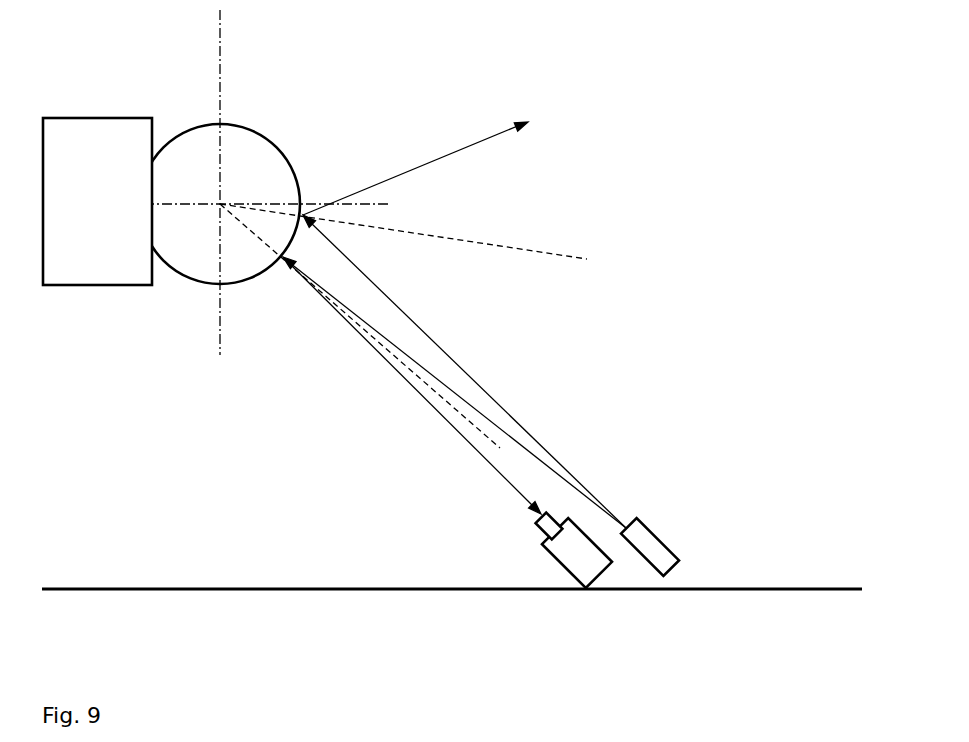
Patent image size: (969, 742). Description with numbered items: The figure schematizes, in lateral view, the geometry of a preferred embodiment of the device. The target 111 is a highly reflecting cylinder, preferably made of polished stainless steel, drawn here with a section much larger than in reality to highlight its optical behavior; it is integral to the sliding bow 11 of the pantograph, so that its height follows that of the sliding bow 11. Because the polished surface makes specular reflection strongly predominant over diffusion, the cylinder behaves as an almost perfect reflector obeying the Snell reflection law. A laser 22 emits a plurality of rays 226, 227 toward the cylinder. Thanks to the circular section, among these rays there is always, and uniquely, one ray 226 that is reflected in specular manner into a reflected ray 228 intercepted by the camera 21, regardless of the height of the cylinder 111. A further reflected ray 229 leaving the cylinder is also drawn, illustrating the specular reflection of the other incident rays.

The sliding bow 11 is at (90, 128).
The target 111 is at (253, 127).
The camera 21 is at (580, 565).
The laser 22 is at (653, 532).
The ray 226 is at (467, 393).
The ray 227 is at (450, 355).
The reflected ray 228 is at (397, 382).
The specularly reflected beam 229 is at (503, 142).